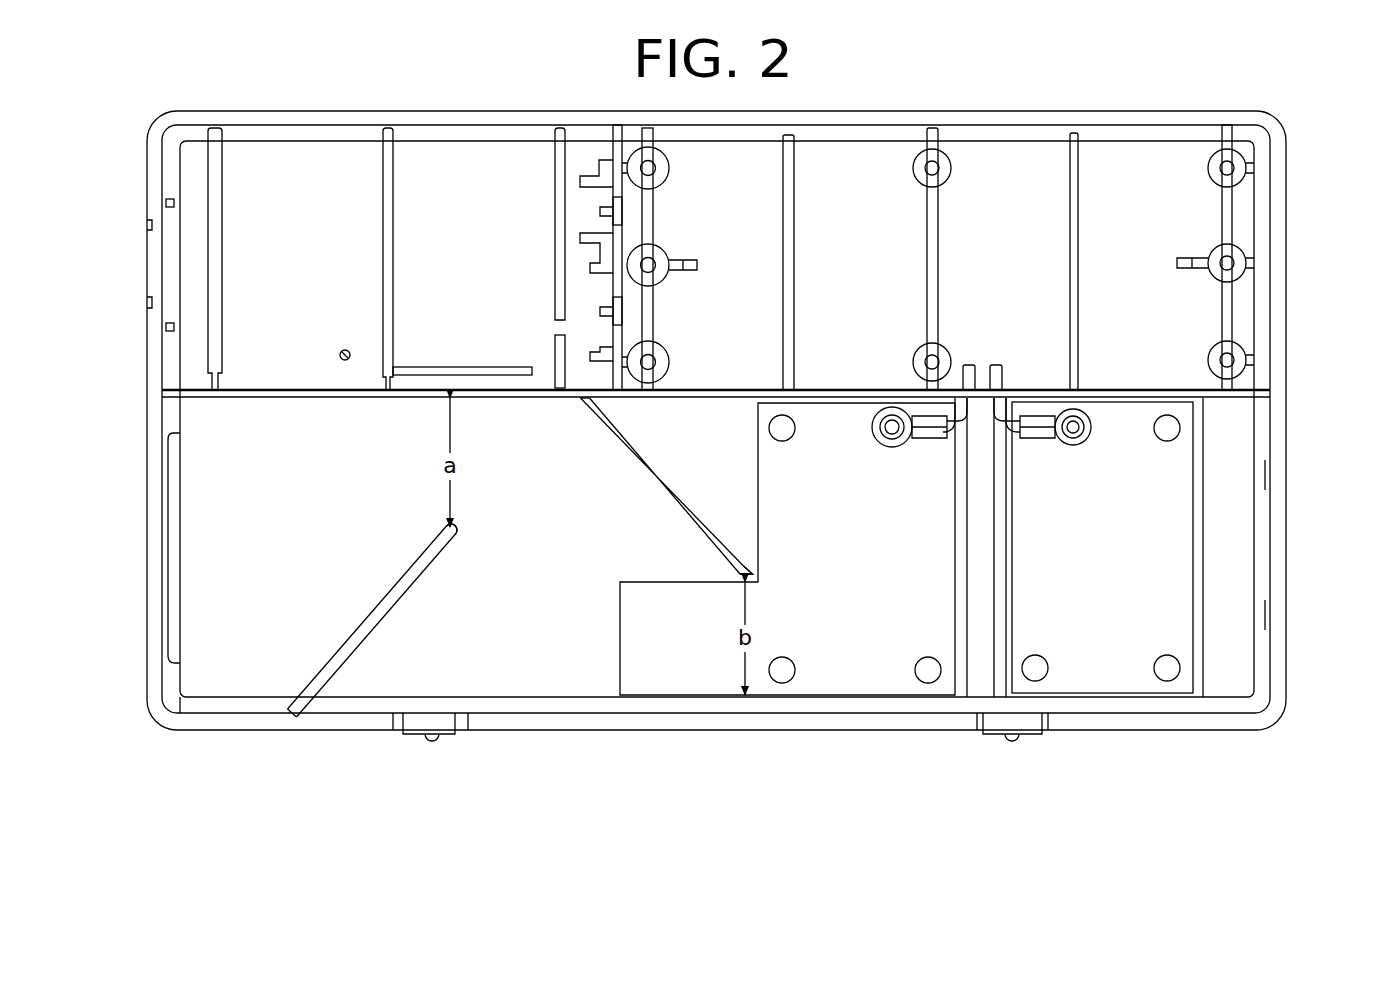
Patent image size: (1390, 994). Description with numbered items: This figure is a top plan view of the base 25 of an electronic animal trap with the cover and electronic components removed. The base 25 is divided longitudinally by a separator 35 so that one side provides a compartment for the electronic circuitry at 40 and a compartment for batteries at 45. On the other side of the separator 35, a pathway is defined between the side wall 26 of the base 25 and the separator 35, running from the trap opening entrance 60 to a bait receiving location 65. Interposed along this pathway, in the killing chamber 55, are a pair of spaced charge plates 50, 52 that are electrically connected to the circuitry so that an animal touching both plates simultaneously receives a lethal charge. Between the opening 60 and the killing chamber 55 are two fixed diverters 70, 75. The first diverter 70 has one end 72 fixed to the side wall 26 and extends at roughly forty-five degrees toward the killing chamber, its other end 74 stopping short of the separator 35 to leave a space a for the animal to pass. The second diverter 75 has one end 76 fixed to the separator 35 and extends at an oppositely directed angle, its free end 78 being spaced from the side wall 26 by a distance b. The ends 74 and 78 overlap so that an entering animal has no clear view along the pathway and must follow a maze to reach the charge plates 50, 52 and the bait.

The base 25 is at (718, 722).
The side wall 26 is at (302, 732).
The separator 35 is at (333, 400).
The electronic circuitry compartment 40 is at (851, 279).
The battery compartment 45 is at (444, 279).
The charge plate 50 is at (829, 606).
The charge plate 52 is at (1089, 576).
The killing chamber 55 is at (982, 664).
The trap opening entrance 60 is at (138, 566).
The bait receiving location 65 is at (1236, 668).
The diverter member 70 is at (360, 625).
The diverter end 72 is at (282, 712).
The diverter end 74 is at (455, 536).
The second diverter member 75 is at (605, 478).
The diverter end 76 is at (575, 405).
The diverter end 78 is at (758, 563).